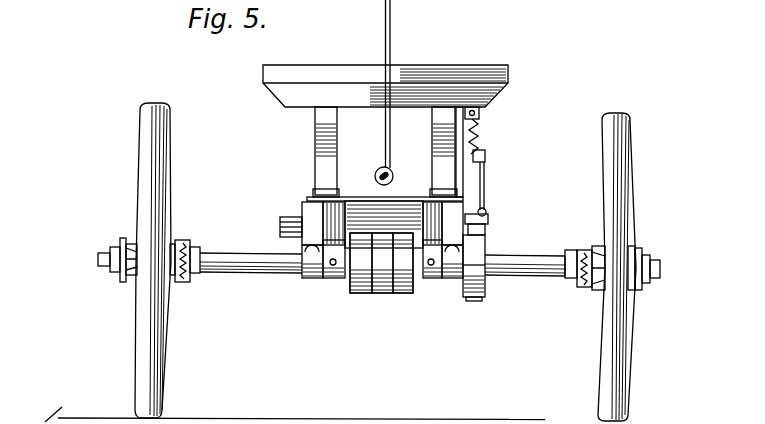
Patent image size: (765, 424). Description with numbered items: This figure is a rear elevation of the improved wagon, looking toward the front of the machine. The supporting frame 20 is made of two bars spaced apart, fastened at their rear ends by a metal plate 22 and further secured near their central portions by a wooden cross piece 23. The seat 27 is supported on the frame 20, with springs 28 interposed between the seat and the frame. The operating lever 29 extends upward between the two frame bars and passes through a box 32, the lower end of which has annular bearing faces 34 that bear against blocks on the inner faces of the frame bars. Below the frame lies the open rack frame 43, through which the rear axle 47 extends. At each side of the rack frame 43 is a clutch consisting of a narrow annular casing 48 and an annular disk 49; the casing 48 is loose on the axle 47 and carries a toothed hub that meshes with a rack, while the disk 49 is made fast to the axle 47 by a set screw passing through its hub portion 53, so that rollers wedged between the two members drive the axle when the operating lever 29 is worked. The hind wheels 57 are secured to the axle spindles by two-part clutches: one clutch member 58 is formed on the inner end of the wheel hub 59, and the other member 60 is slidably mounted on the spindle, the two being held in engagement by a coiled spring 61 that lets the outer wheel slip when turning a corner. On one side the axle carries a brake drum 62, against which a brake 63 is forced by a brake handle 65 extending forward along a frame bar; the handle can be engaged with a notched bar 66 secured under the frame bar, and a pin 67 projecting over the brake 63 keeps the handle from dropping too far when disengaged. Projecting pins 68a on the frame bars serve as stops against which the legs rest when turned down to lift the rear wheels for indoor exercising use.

The supporting frame 20 is at (311, 215).
The metal plate 22 is at (372, 196).
The wooden cross piece 23 is at (355, 205).
The seat 27 is at (408, 72).
The springs 28 is at (322, 130).
The operating lever 29 is at (393, 36).
The box 32 is at (393, 178).
The annular bearing faces 34 is at (392, 169).
The open frame 43 is at (383, 296).
The rear axle 47 is at (532, 272).
The annular casing 48 is at (365, 294).
The annular disk 49 is at (350, 296).
The hub portion 53 is at (325, 280).
The hind wheels 57 is at (158, 330).
The clutch member 58 is at (184, 238).
The wheel hub 59 is at (178, 280).
The clutch member 60 is at (188, 245).
The coiled spring 61 is at (200, 270).
The brake drum 62 is at (474, 300).
The brake 63 is at (487, 247).
The brake handle 65 is at (485, 182).
The notched bar 66 is at (474, 128).
The pin 67 is at (488, 226).
The projecting pins 68a is at (300, 225).